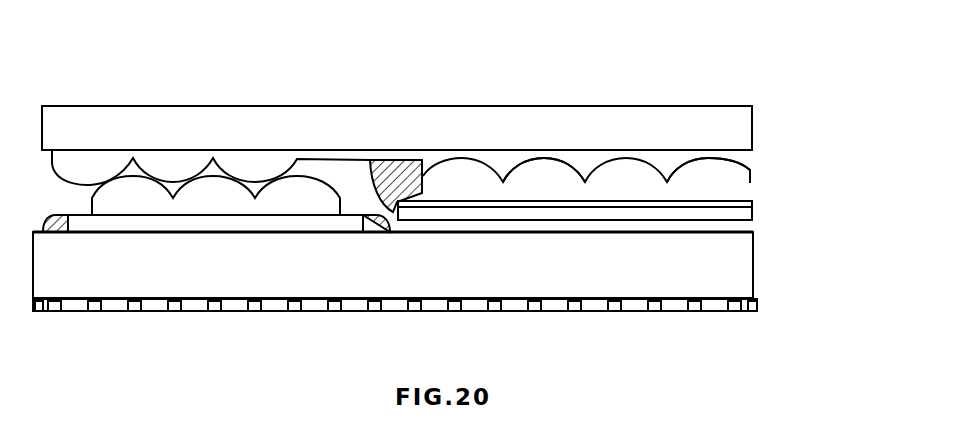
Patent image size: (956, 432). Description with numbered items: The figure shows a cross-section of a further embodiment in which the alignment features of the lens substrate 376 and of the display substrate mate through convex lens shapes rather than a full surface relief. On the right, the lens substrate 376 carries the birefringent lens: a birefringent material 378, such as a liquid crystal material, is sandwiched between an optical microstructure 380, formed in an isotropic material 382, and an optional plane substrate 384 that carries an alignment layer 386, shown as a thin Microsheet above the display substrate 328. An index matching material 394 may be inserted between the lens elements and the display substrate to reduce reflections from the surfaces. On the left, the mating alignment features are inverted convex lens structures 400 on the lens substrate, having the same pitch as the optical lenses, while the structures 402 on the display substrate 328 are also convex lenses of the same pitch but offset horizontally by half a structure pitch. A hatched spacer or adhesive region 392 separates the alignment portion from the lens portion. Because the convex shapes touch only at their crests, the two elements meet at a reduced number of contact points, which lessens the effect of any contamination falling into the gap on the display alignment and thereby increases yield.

The substrate 328 is at (753, 265).
The lens substrate 376 is at (398, 106).
The birefringent material 378 is at (455, 178).
The optical microstructure 380 is at (555, 182).
The isotropic material 382 is at (738, 153).
The plane substrate 384 is at (752, 216).
The alignment layer 386 is at (752, 202).
The spacer / adhesive 392 is at (370, 162).
The index matching material 394 is at (740, 227).
The convex lens structures 400 is at (158, 165).
The structures on the display substrate 402 is at (132, 198).